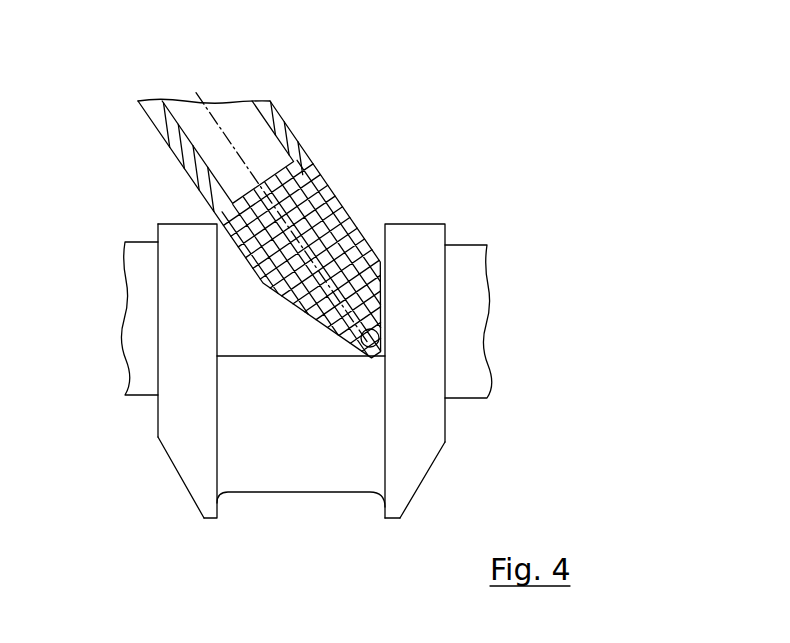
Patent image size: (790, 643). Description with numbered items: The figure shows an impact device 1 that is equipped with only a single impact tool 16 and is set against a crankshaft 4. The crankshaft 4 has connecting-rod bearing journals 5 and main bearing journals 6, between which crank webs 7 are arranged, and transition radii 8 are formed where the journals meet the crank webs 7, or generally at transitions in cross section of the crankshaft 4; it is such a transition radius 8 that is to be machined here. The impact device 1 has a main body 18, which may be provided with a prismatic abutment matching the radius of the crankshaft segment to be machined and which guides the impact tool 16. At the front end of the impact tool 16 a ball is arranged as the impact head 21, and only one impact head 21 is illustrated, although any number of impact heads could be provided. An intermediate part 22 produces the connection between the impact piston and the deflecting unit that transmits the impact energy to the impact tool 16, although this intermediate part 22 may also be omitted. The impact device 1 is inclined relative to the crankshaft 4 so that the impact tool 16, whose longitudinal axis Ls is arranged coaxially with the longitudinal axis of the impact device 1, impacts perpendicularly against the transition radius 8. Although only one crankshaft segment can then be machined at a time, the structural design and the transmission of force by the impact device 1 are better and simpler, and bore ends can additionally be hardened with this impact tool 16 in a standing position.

The impact device 1 is at (317, 143).
The crankshaft 4 is at (546, 263).
The connecting-rod bearing journal 5 is at (307, 480).
The main bearing journal 6 is at (128, 303).
The crank web 7 is at (182, 465).
The transition radius 8 is at (448, 242).
The impact tool 16 is at (323, 232).
The main body 18 is at (175, 148).
The impact head 21 is at (372, 358).
The intermediate part 22 is at (188, 114).
The longitudinal axis of the impact tool Ls is at (230, 140).